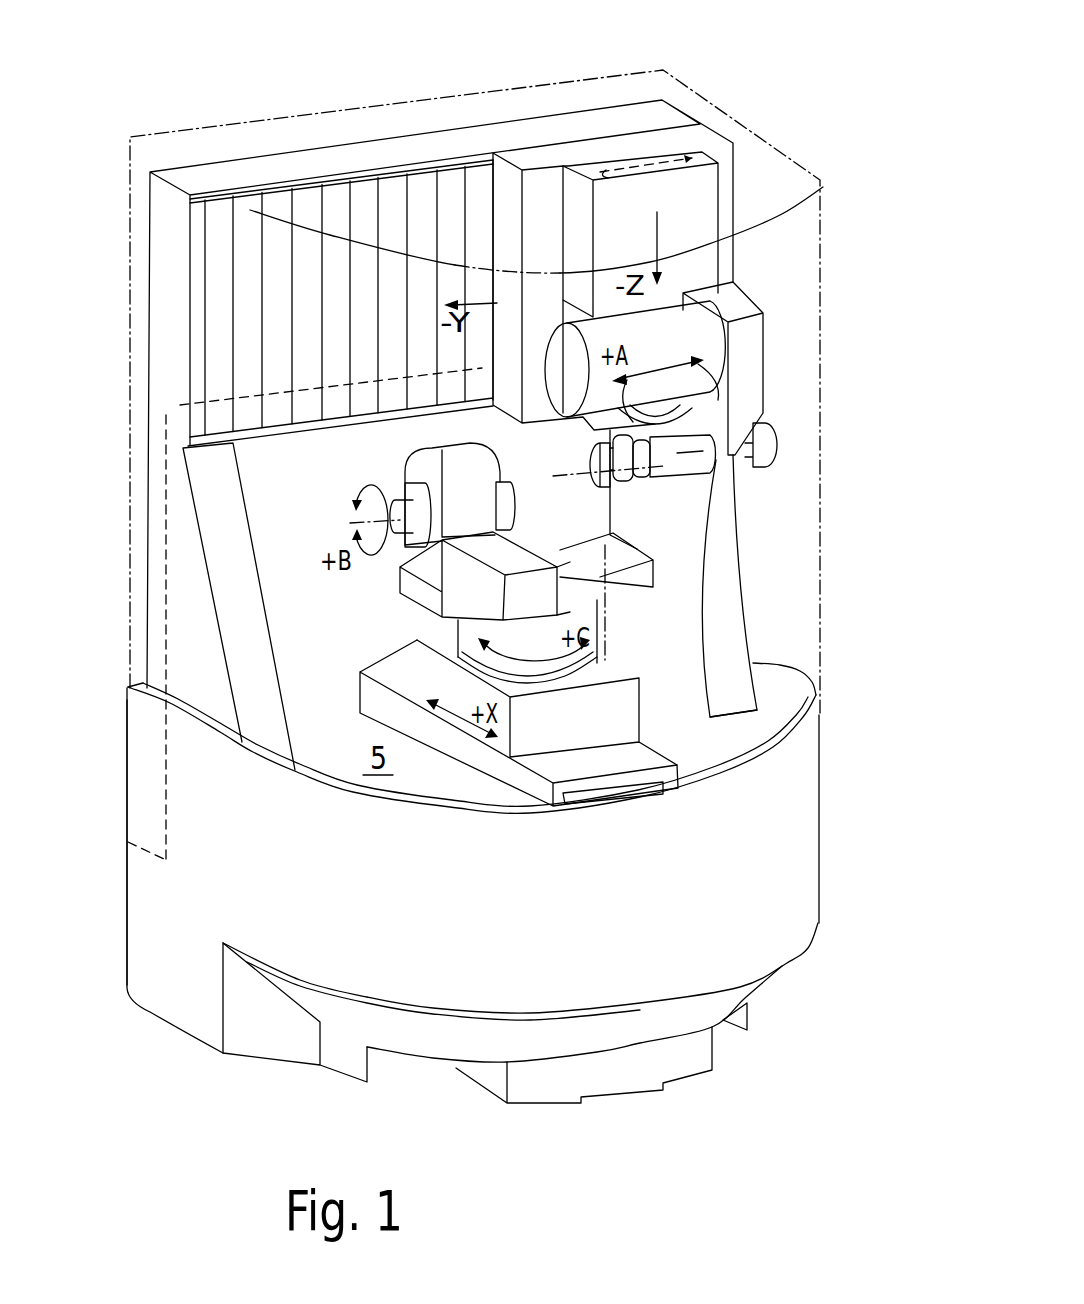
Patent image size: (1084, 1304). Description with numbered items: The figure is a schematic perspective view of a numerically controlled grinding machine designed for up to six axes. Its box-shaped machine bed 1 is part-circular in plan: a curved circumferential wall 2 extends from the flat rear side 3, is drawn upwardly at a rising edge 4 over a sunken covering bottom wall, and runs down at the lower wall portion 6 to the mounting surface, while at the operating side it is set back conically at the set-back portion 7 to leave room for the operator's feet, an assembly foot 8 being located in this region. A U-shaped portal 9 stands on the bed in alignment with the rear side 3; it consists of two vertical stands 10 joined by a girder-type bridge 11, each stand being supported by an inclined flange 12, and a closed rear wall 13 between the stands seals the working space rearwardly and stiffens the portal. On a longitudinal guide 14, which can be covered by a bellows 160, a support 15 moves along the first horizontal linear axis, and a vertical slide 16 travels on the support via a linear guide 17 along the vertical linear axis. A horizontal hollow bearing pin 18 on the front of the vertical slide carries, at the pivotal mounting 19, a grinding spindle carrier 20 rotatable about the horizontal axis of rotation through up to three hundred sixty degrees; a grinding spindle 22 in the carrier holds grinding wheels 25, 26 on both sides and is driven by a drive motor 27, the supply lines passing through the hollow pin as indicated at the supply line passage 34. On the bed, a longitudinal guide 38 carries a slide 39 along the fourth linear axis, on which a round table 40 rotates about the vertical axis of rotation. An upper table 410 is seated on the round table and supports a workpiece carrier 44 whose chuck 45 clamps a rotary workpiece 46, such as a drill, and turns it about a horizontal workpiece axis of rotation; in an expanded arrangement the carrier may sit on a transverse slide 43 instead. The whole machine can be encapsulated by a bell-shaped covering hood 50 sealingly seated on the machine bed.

The machine bed 1 is at (118, 806).
The circumferential wall 2 is at (656, 898).
The rear side 3 is at (123, 732).
The rising edge 4 is at (777, 703).
The lower wall portion 6 is at (167, 973).
The conically set-back portion 7 is at (475, 1033).
The assembly foot 8 is at (638, 1070).
The portal 9 is at (458, 116).
The vertical stand 10 is at (185, 598).
The bridge 11 is at (368, 157).
The inclined flange 12 is at (242, 608).
The rear wall 13 is at (260, 502).
The longitudinal guide 14 is at (260, 193).
The support 15 is at (543, 204).
The vertical slide 16 is at (697, 210).
The linear guide 17 is at (657, 157).
The bearing pin 18 is at (740, 407).
The pivotal mounting 19 is at (613, 513).
The grinding spindle carrier 20 is at (745, 358).
The grinding spindle 22 is at (753, 452).
The grinding wheel 25 is at (490, 498).
The grinding wheel 26 is at (780, 442).
The drive motor 27 is at (618, 333).
The supply line passage 34 is at (272, 393).
The longitudinal guide 38 is at (607, 793).
The slide 39 is at (640, 763).
The round table 40 is at (470, 632).
The transverse slide 43 is at (740, 597).
The workpiece carrier 44 is at (502, 487).
The chuck 45 is at (400, 547).
The rotary workpiece 46 is at (392, 503).
The covering hood 50 is at (778, 133).
The bellows 160 is at (225, 322).
The upper table 410 is at (630, 605).